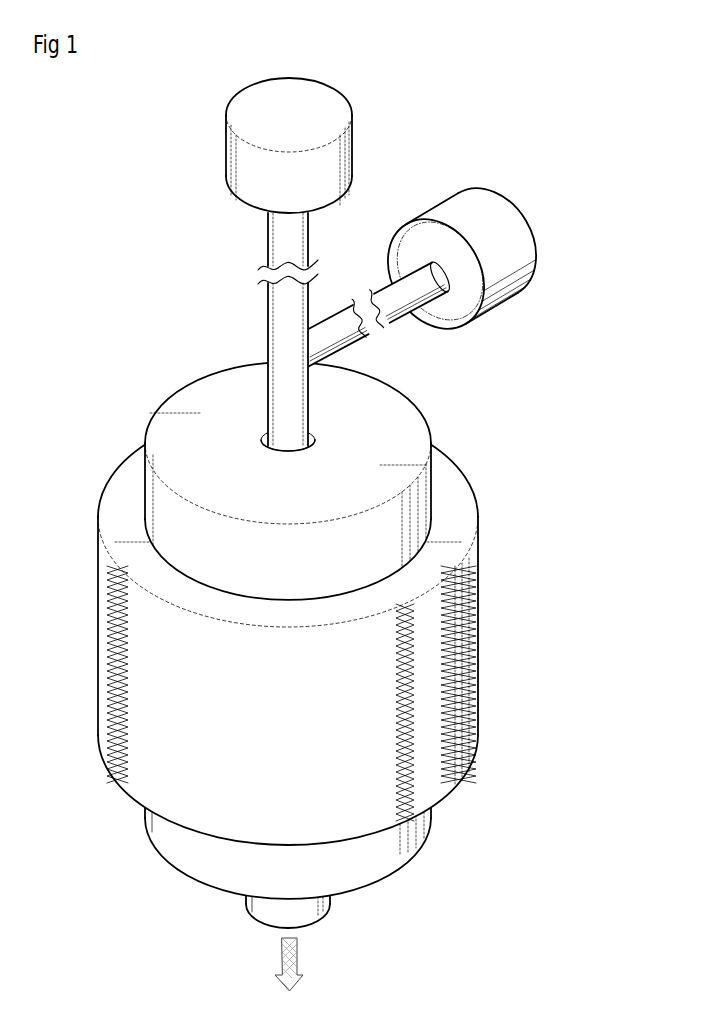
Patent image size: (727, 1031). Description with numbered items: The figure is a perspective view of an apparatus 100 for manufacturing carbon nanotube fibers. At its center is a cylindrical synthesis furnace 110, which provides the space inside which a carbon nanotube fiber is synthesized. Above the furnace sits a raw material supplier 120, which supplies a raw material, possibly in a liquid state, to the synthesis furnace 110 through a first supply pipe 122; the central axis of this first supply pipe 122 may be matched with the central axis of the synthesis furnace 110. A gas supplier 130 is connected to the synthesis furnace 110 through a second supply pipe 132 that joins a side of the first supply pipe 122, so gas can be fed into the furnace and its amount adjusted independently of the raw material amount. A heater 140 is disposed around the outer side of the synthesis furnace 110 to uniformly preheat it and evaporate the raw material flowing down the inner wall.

The apparatus for manufacturing carbon nanotube fibers 100 is at (78, 318).
The synthesis furnace 110 is at (428, 431).
The raw material supplier 120 is at (226, 146).
The first supply pipe 122 is at (268, 318).
The gas supplier 130 is at (522, 246).
The second supply pipe 132 is at (412, 311).
The heater 140 is at (476, 640).